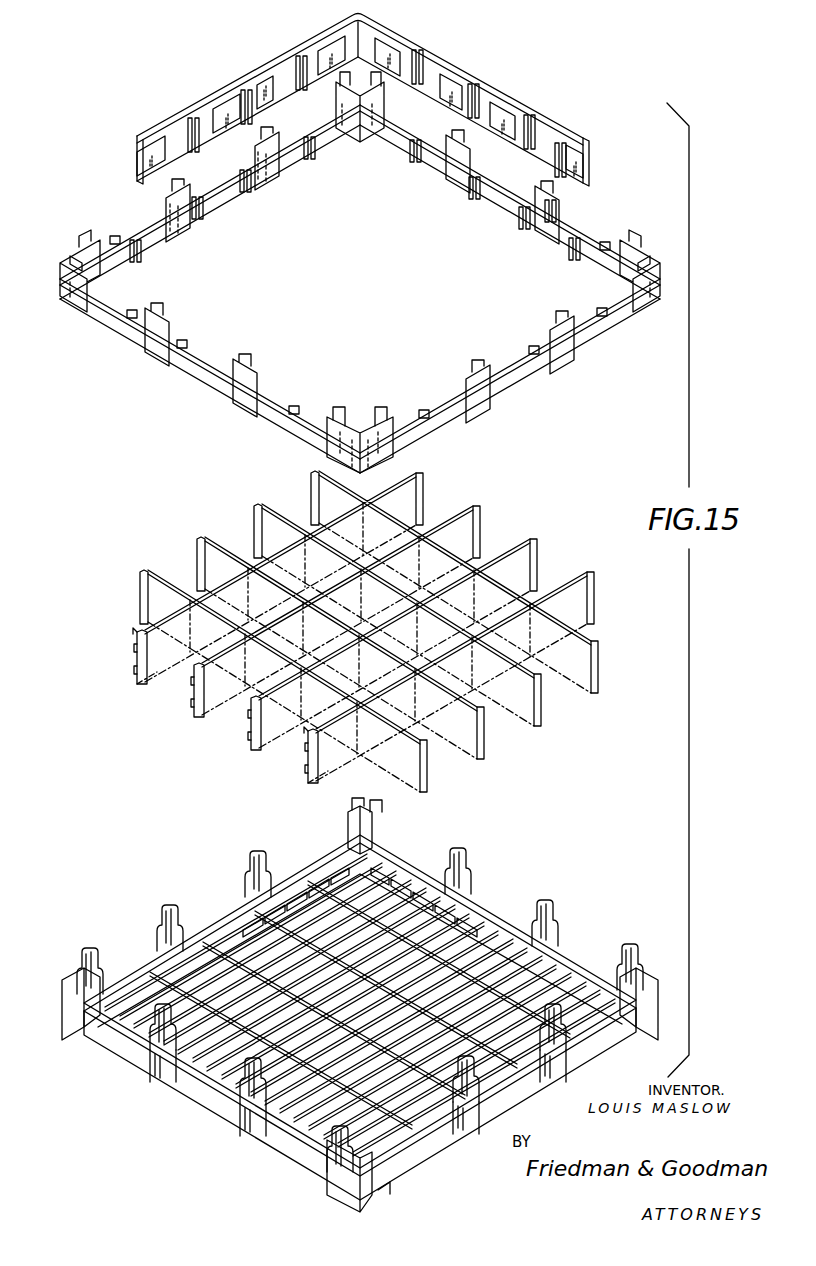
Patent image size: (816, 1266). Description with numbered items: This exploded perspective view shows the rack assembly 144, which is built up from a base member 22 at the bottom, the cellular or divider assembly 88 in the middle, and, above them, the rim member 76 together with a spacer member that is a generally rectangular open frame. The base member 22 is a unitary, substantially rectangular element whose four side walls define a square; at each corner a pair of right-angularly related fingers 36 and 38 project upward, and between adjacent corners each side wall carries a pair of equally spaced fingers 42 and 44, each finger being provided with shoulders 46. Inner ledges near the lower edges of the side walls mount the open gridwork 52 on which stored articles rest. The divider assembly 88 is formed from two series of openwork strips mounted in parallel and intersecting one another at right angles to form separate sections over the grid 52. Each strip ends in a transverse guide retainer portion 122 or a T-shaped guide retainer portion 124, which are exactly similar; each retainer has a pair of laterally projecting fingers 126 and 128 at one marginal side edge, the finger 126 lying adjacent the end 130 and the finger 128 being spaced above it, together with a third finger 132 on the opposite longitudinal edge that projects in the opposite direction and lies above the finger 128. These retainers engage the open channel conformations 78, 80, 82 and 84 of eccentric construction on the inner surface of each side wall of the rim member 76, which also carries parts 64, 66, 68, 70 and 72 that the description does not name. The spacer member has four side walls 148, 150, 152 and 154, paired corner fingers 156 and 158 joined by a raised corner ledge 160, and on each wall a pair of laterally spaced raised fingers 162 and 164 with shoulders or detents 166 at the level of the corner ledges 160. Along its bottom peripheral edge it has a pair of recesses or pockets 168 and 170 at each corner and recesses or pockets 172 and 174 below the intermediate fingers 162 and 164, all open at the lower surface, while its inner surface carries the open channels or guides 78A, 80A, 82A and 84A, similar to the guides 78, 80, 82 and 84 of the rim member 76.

The base member 22 is at (544, 860).
The corner finger 36 is at (376, 806).
The corner finger 38 is at (352, 806).
The finger 42 is at (260, 848).
The finger 44 is at (170, 898).
The shoulder 46 is at (556, 910).
The open gridwork 52 is at (475, 898).
The frame end 64 is at (589, 135).
The outer lip 66 is at (378, 33).
The inner lip 68 is at (420, 34).
The side panel 70 is at (176, 116).
The end panel 72 is at (268, 72).
The rim member 76 is at (350, 18).
The open channel conformation 78 is at (424, 62).
The open channel conformation 80 is at (189, 112).
The open channel conformation 82 is at (246, 84).
The open channel conformation 84 is at (300, 50).
The open channel guide 78A is at (412, 166).
The open channel guide 80A is at (208, 216).
The open channel guide 82A is at (250, 195).
The open channel guide 84A is at (310, 160).
The cellular divider assembly 88 is at (197, 534).
The transverse guide retainer portion 122 is at (488, 753).
The T-shaped guide retainer portion 124 is at (132, 650).
The laterally projecting finger 126 is at (146, 645).
The laterally projecting finger 128 is at (142, 668).
The end of guide retainer portion 130 is at (136, 628).
The third laterally projecting finger 132 is at (132, 674).
The rack assembly 144 is at (270, 44).
The side wall 148 is at (292, 133).
The side wall 150 is at (405, 140).
The side wall 152 is at (533, 382).
The side wall 154 is at (196, 372).
The corner finger 156 is at (340, 84).
The corner finger 158 is at (380, 88).
The raised corner ledge 160 is at (58, 266).
The raised finger 162 is at (186, 192).
The raised finger 164 is at (168, 312).
The shoulder 166 is at (100, 238).
The corner recess 168 is at (376, 146).
The corner recess 170 is at (350, 122).
The recess 172 is at (204, 240).
The recess 174 is at (302, 170).